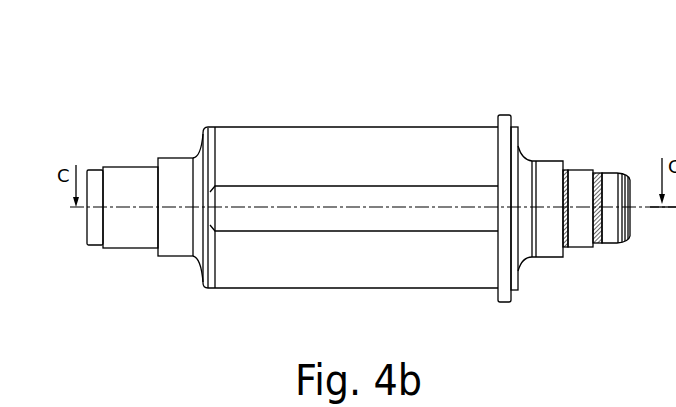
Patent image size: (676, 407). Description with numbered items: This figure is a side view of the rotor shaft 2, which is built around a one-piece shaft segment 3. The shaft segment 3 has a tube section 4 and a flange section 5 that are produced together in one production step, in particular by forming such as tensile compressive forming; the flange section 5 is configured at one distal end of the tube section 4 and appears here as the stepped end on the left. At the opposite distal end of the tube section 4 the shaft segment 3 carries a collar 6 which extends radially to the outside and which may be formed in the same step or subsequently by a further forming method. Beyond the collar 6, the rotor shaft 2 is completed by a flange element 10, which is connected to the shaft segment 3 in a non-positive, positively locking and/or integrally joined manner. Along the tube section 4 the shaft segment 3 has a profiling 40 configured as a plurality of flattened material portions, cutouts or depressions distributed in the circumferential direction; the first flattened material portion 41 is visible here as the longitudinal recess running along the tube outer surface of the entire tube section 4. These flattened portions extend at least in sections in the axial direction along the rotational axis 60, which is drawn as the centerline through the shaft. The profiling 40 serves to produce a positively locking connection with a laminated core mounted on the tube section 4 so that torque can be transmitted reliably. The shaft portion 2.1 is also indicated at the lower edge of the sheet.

The rotor shaft 2 is at (304, 78).
The shaft portion 2.1 is at (612, 406).
The shaft segment 3 is at (573, 403).
The tube section 4 is at (396, 138).
The flange section 5 is at (115, 172).
The collar 6 is at (502, 113).
The flange element 10 is at (607, 183).
The profiling 40 is at (268, 127).
The first flattened material portion 41 is at (243, 191).
The rotational axis 60 is at (660, 210).